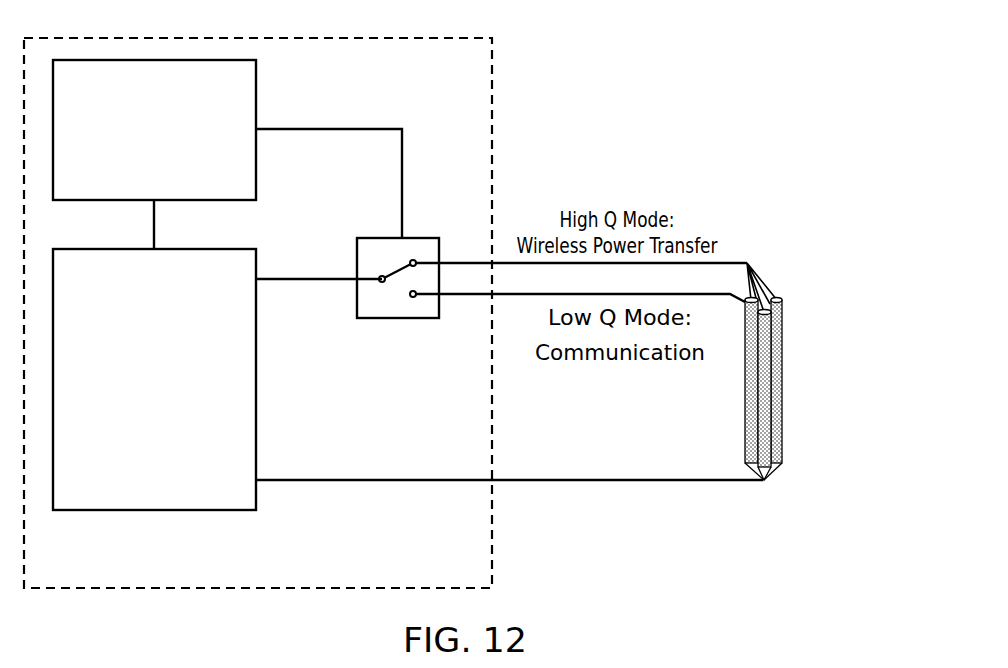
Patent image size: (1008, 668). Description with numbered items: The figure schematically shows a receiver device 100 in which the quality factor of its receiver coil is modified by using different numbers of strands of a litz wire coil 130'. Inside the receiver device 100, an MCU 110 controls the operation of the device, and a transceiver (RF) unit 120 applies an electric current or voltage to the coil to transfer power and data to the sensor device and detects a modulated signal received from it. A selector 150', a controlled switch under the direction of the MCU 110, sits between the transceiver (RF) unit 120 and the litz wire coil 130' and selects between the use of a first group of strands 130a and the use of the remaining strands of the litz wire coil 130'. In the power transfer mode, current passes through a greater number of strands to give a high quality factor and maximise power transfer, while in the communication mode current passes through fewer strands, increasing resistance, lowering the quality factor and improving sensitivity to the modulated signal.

The receiver device 100 is at (492, 98).
The MCU 110 is at (256, 107).
The transceiver (RF) unit 120 is at (256, 446).
The selector 150' is at (442, 226).
The litz wire coil 130' is at (761, 348).
The first group of strands 130a is at (745, 415).